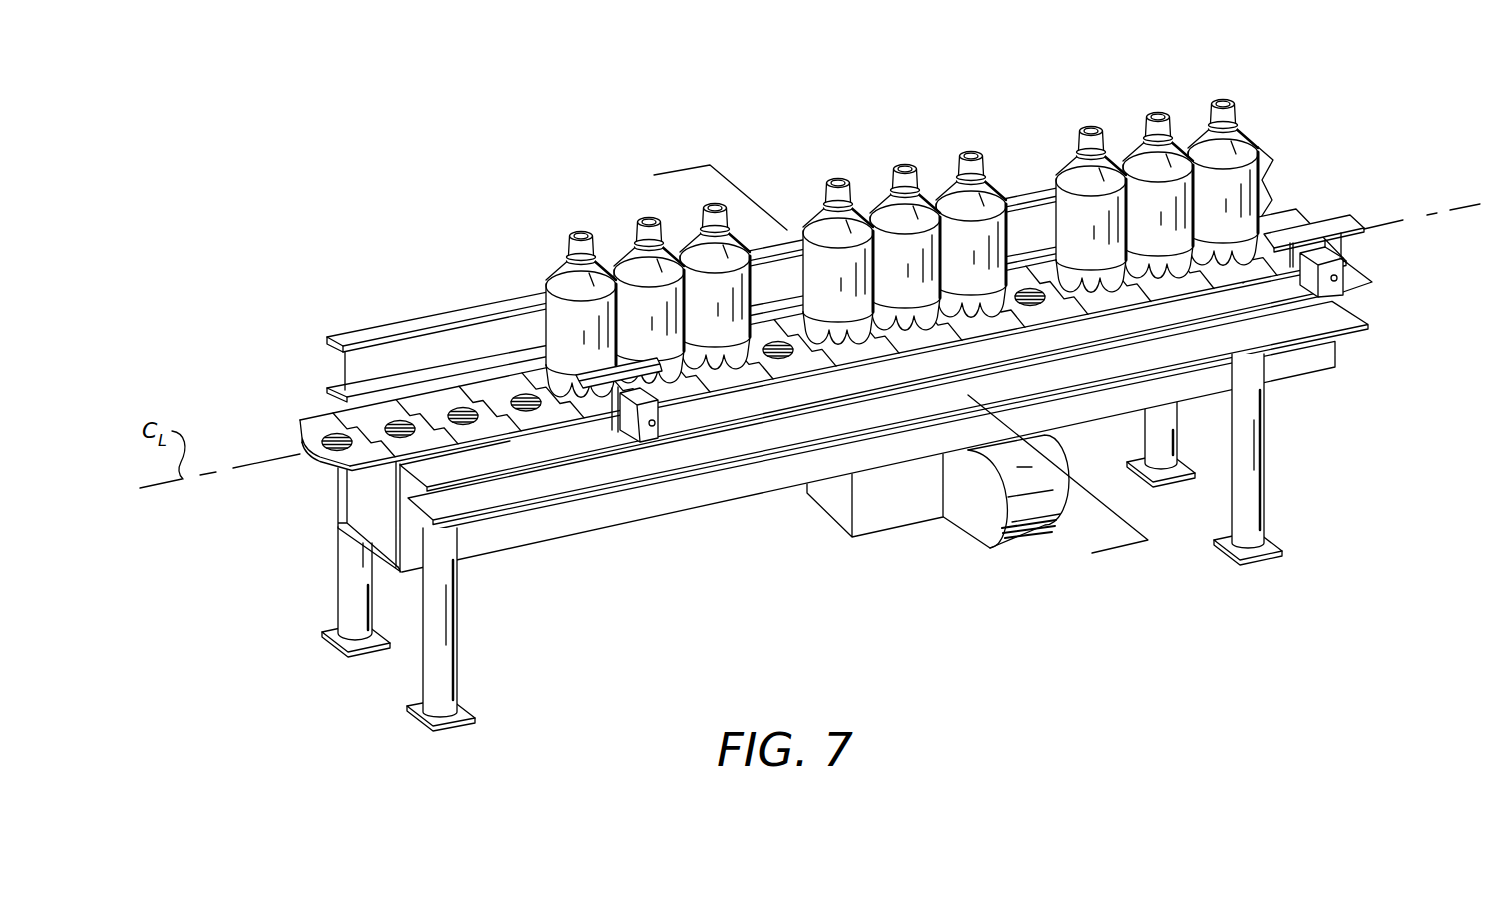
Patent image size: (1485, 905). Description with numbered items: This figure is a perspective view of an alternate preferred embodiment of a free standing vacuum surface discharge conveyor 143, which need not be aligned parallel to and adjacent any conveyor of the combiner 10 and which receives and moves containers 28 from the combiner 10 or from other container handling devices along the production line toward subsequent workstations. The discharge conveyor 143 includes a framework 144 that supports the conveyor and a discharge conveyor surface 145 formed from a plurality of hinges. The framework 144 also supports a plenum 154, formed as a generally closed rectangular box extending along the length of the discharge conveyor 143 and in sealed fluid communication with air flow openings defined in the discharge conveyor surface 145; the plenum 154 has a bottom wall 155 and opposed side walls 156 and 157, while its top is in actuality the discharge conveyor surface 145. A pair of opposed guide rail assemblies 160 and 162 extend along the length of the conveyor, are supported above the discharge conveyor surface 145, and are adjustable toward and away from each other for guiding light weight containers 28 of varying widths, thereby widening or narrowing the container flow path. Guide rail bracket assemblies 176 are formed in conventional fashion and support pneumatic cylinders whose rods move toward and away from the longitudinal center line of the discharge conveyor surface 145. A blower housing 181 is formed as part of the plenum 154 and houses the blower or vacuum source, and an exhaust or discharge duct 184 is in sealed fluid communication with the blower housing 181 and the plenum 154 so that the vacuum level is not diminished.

The combiner 10 is at (887, 364).
The containers 28 is at (1201, 146).
The vacuum discharge conveyor 143 is at (352, 252).
The framework 144 is at (438, 658).
The discharge conveyor surface 145 is at (357, 417).
The plenum 154 is at (644, 545).
The bottom wall 155 is at (390, 530).
The side wall 156 is at (550, 532).
The side wall 157 is at (363, 495).
The guide rail assembly 160 is at (488, 300).
The guide rail assembly 162 is at (1336, 206).
The guide rail bracket assembly 176 is at (1360, 258).
The blower housing 181 is at (982, 520).
The exhaust duct 184 is at (875, 511).